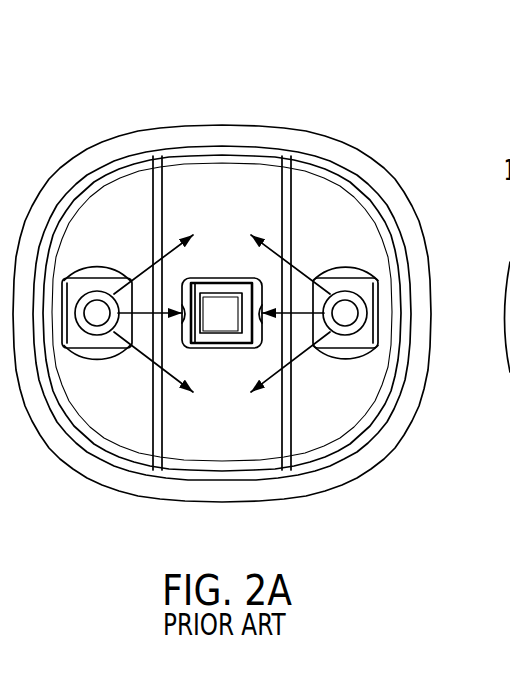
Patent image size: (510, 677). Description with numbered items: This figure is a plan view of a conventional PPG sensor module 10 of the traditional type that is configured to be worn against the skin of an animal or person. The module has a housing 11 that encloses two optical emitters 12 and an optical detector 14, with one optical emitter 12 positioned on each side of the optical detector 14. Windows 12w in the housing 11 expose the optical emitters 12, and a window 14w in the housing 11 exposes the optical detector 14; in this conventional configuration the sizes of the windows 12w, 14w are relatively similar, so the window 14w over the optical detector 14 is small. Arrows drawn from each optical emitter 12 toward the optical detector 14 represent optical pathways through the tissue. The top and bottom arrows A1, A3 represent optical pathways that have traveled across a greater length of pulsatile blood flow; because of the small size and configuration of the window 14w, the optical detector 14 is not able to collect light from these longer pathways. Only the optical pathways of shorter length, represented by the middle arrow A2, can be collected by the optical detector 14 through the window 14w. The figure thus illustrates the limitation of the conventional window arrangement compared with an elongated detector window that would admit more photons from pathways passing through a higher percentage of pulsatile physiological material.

The PPG sensor module 10 is at (373, 85).
The housing 11 is at (432, 303).
The optical emitters 12 is at (97, 308).
The windows 12w is at (82, 268).
The optical detector 14 is at (222, 310).
The window 14w is at (216, 278).
The top arrow A1 is at (148, 270).
The arrow A2 is at (132, 350).
The bottom arrow A3 is at (145, 358).